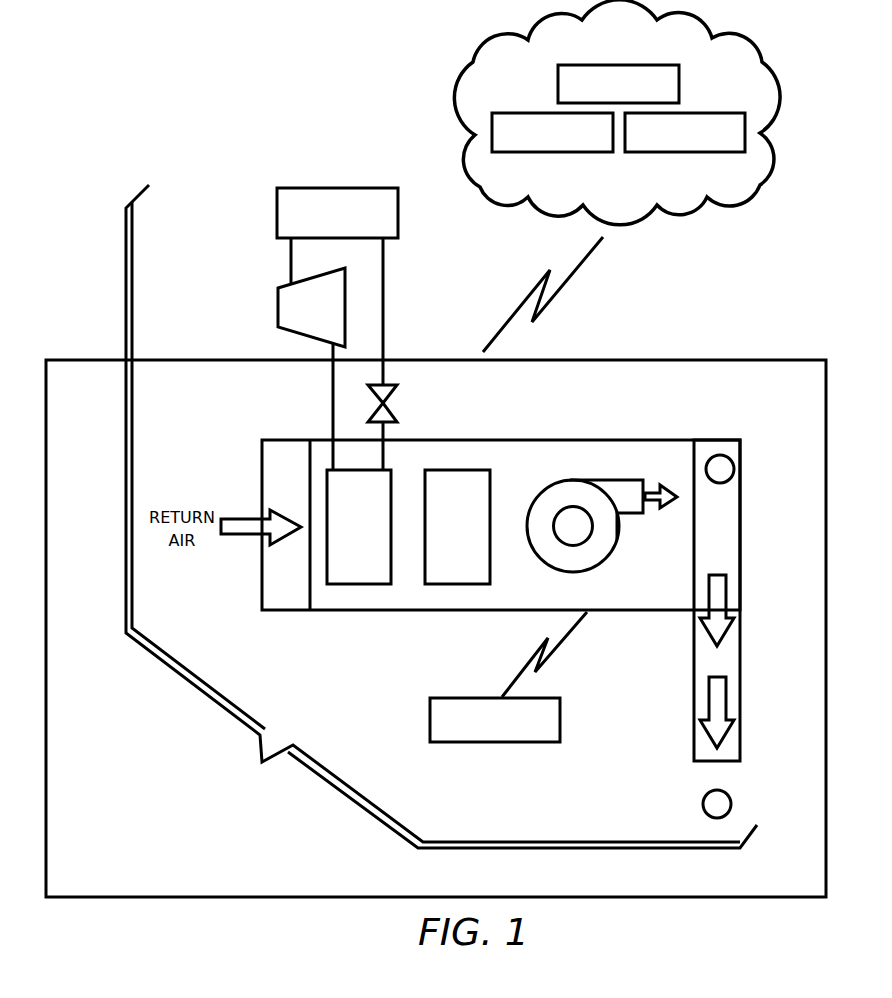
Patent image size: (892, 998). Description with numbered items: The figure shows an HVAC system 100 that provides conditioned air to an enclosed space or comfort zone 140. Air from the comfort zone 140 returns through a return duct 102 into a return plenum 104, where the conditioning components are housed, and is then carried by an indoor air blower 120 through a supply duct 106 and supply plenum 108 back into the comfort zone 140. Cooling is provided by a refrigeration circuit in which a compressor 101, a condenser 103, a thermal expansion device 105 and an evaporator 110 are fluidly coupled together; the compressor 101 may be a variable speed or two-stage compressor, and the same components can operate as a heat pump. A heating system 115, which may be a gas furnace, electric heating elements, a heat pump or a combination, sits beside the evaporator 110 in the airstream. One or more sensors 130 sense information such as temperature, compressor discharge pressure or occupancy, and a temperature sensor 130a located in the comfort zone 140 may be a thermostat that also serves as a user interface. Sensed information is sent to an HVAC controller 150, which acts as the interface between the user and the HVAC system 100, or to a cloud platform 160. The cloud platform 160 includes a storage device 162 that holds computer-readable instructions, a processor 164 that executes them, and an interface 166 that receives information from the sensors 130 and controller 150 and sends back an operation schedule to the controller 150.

The HVAC system 100 is at (441, 516).
The compressor 101 is at (278, 305).
The return duct 102 is at (287, 610).
The condenser 103 is at (277, 206).
The return plenum 104 is at (568, 440).
The thermal expansion device 105 is at (390, 403).
The supply duct 106 is at (742, 562).
The supply plenum 108 is at (694, 673).
The evaporator 110 is at (359, 527).
The heating system 115 is at (457, 527).
The indoor air blower 120 is at (586, 572).
The sensor 130 is at (735, 469).
The temperature sensor 130a is at (731, 804).
The comfort zone 140 is at (436, 628).
The HVAC controller 150 is at (502, 742).
The cloud platform 160 is at (537, 210).
The storage device 162 is at (567, 152).
The processor 164 is at (697, 112).
The interface 166 is at (620, 65).